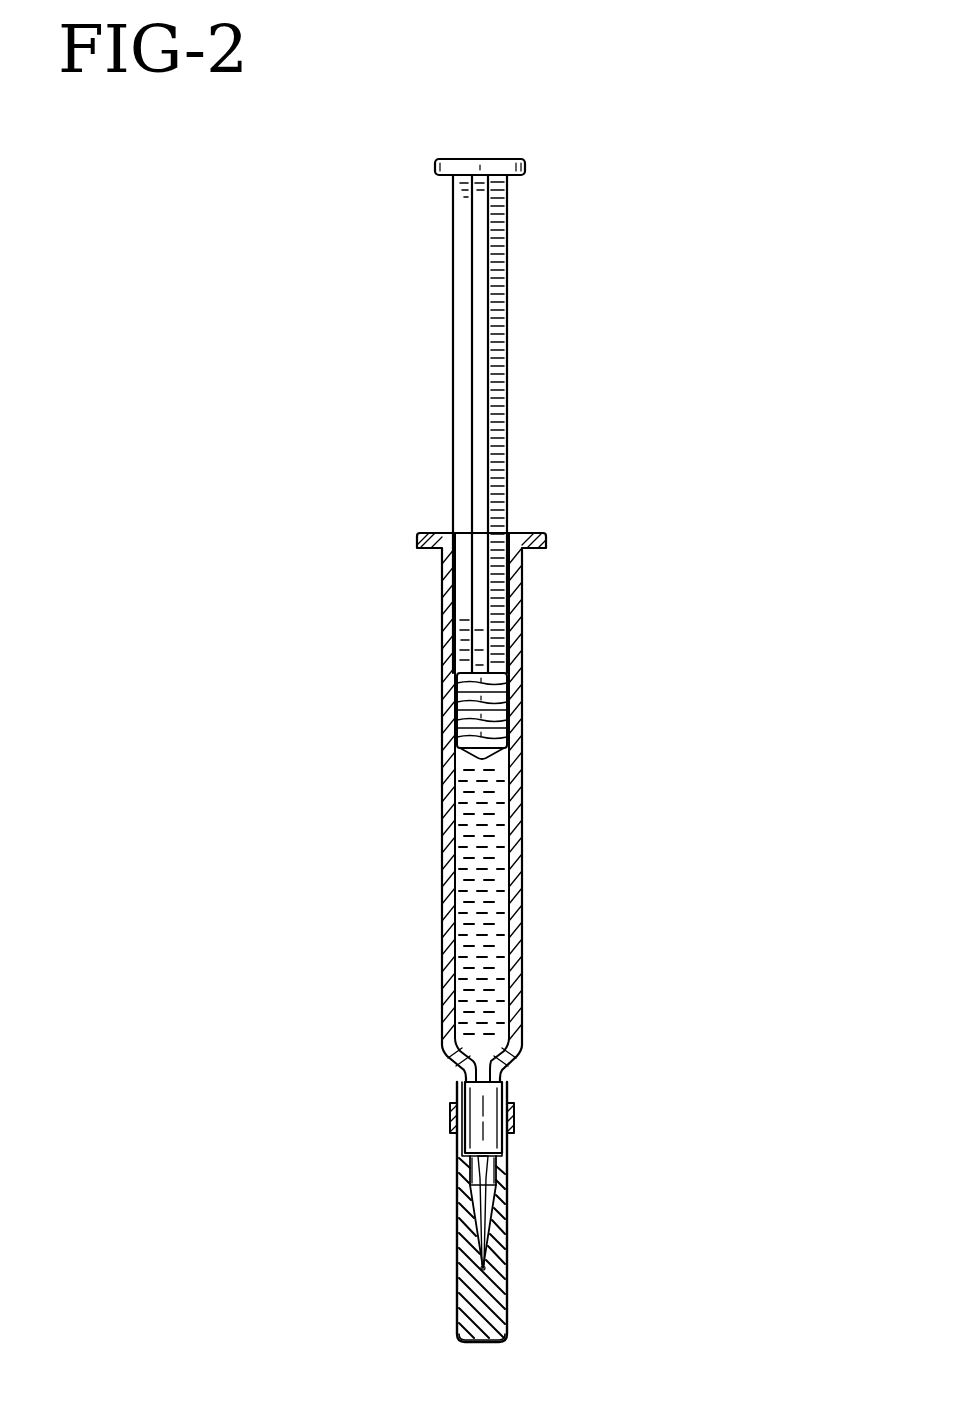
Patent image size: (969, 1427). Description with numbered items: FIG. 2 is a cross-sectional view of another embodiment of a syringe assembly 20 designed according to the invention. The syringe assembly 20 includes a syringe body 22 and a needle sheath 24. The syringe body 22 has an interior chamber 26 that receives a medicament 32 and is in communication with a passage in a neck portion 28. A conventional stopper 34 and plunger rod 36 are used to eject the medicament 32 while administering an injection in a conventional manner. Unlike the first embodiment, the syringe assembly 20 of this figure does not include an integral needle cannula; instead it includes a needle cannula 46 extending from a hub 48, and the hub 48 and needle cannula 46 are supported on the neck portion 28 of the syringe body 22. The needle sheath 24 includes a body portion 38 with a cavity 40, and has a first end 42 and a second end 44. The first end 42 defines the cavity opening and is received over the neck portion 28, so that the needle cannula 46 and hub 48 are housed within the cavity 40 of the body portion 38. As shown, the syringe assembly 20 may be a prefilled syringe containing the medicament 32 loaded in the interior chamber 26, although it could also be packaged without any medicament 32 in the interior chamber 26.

The syringe assembly 20 is at (728, 647).
The syringe body 22 is at (524, 691).
The needle sheath 24 is at (510, 1255).
The interior chamber 26 is at (501, 1000).
The neck portion 28 is at (463, 1074).
The medicament 32 is at (486, 868).
The stopper 34 is at (468, 708).
The plunger rod 36 is at (456, 426).
The body portion 38 is at (459, 1276).
The cavity 40 is at (475, 1191).
The first end 42 is at (510, 1082).
The second end 44 is at (490, 1339).
The needle cannula 46 is at (502, 1172).
The hub 48 is at (514, 1122).